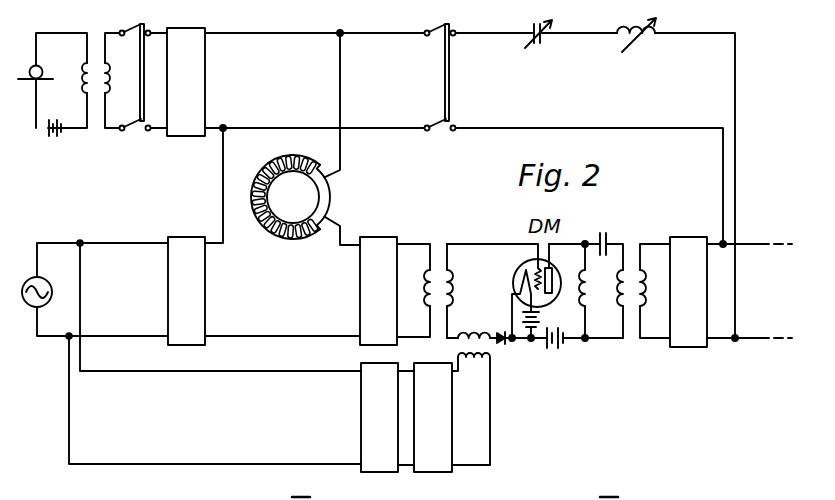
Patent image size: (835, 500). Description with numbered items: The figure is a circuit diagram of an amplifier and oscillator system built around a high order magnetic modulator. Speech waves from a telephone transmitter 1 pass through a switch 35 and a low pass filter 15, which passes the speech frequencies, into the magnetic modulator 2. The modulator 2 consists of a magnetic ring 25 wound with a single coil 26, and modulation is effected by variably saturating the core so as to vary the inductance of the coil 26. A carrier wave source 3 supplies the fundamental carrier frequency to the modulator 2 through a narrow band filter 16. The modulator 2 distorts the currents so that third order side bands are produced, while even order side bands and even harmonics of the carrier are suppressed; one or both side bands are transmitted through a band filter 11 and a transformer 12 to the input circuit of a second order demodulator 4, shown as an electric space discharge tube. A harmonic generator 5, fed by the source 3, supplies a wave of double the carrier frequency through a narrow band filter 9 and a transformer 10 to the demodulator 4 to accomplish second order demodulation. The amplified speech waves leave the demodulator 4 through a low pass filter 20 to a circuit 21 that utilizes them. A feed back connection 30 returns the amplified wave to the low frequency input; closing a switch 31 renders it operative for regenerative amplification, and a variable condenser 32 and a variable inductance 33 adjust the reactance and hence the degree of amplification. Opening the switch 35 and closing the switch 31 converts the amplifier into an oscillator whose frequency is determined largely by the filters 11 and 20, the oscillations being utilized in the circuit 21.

The telephone transmitter 1 is at (41, 66).
The switch 35 is at (137, 56).
The low pass filter 15 is at (183, 136).
The magnetic modulator 2 is at (307, 139).
The magnetic ring 25 is at (327, 180).
The coil 26 is at (266, 166).
The carrier wave source 3 is at (41, 281).
The narrow band filter 16 is at (186, 247).
The band filter 11 is at (373, 248).
The transformer 12 is at (435, 258).
The second order demodulator 4 is at (515, 270).
The transformer 10 is at (497, 347).
The low pass filter 20 is at (684, 246).
The utilizing circuit 21 is at (757, 247).
The feed back circuit 30 is at (580, 169).
The switch 31 is at (449, 77).
The variable condenser 32 is at (536, 10).
The variable inductance 33 is at (636, 26).
The harmonic generator 5 is at (361, 399).
The narrow band filter 9 is at (452, 400).